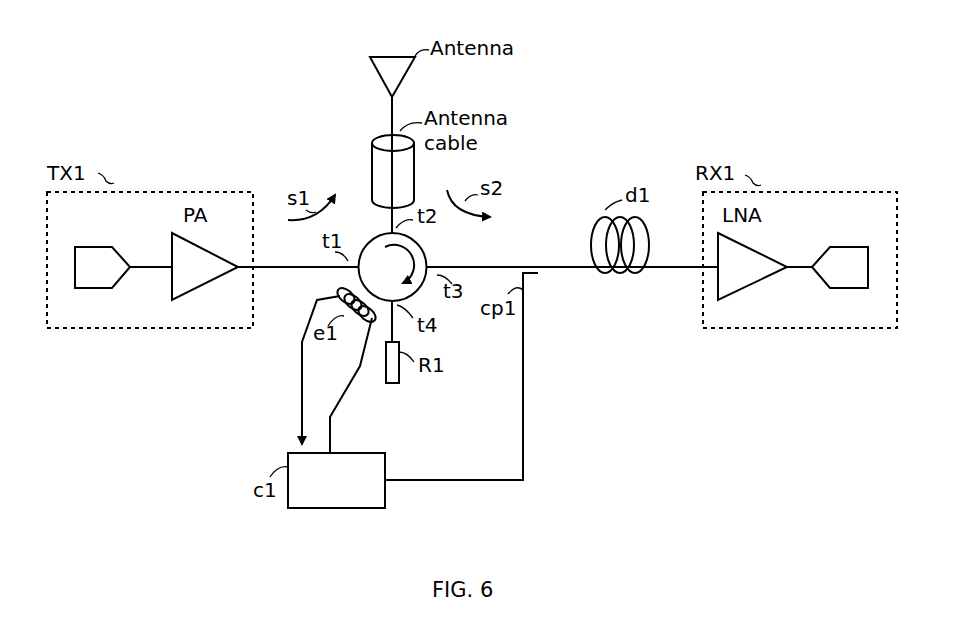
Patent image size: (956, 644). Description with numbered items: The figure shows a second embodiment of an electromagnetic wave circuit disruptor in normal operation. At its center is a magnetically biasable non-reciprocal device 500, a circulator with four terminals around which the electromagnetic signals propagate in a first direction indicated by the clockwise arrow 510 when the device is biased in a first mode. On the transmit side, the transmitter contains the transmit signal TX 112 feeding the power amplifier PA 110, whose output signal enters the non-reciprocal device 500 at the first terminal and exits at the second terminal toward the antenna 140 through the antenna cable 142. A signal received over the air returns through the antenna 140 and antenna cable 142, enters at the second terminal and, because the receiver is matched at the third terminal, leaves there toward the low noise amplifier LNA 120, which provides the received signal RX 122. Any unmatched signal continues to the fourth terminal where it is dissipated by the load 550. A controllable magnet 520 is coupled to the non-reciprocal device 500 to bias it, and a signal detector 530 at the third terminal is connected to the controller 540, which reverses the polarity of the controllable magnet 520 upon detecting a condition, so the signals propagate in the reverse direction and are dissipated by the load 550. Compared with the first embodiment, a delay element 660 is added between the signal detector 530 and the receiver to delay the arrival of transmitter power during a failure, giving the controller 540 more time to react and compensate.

The antenna 140 is at (370, 57).
The antenna cable 142 is at (414, 150).
The power amplifier PA 110 is at (172, 233).
The transmit signal TX 112 is at (100, 290).
The low noise amplifier LNA 120 is at (745, 243).
The received signal RX 122 is at (835, 247).
The non-reciprocal device 500 is at (358, 285).
The clockwise arrow 510 is at (426, 282).
The controllable magnet e1 520 is at (355, 328).
The signal detector cp1 530 is at (528, 292).
The controller c1 540 is at (336, 480).
The load R1 550 is at (399, 378).
The delay element d1 660 is at (602, 210).